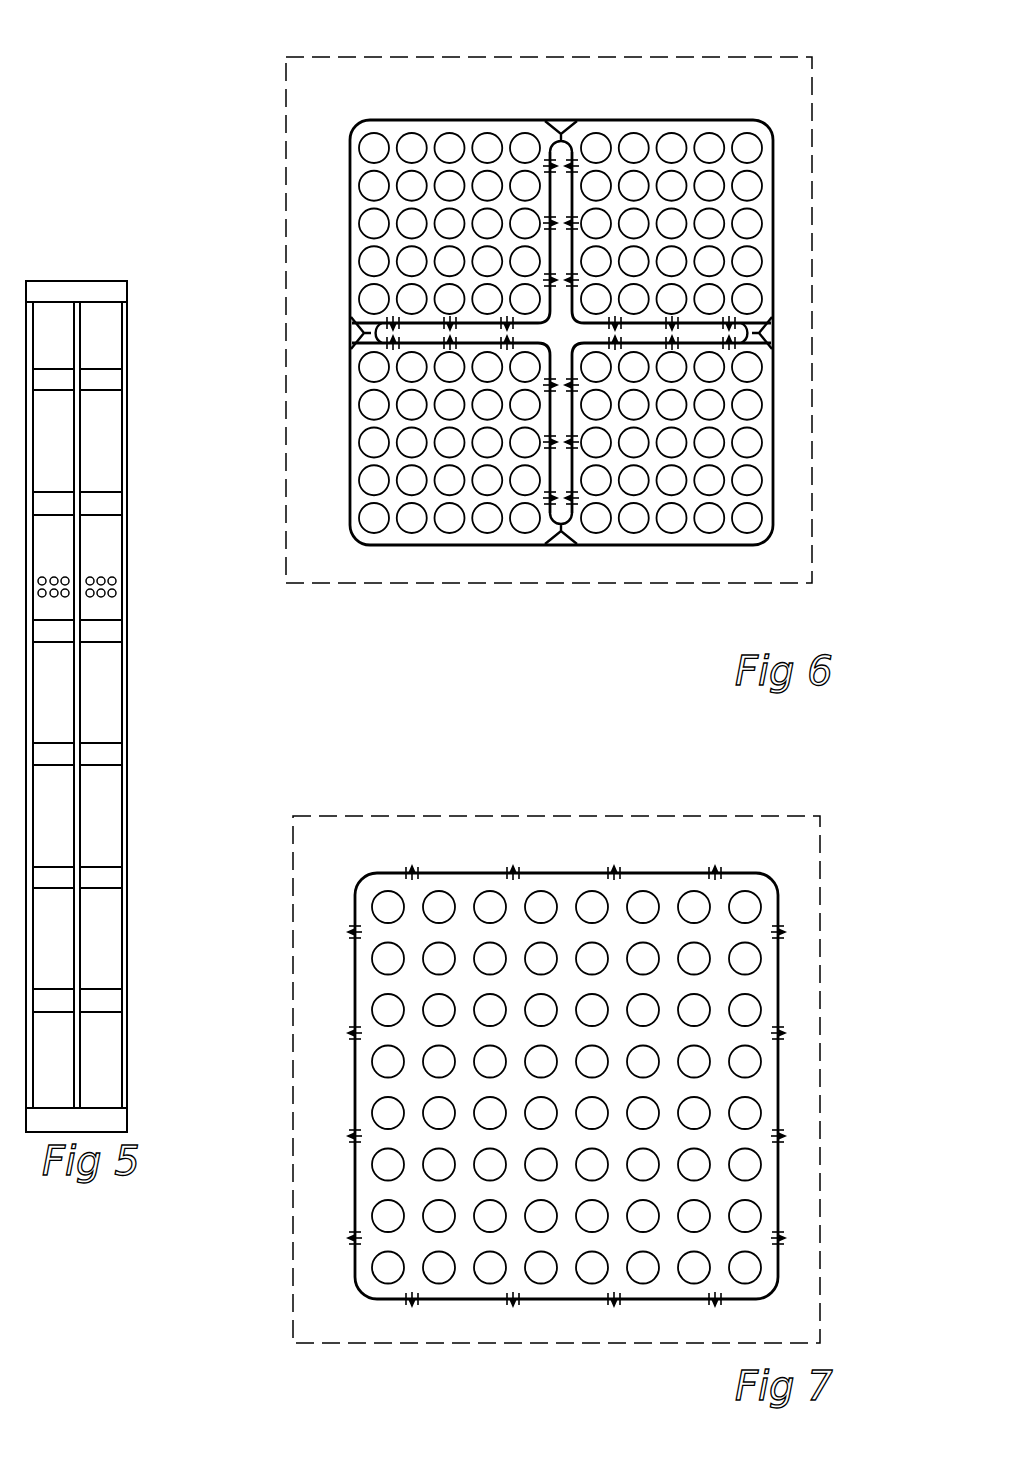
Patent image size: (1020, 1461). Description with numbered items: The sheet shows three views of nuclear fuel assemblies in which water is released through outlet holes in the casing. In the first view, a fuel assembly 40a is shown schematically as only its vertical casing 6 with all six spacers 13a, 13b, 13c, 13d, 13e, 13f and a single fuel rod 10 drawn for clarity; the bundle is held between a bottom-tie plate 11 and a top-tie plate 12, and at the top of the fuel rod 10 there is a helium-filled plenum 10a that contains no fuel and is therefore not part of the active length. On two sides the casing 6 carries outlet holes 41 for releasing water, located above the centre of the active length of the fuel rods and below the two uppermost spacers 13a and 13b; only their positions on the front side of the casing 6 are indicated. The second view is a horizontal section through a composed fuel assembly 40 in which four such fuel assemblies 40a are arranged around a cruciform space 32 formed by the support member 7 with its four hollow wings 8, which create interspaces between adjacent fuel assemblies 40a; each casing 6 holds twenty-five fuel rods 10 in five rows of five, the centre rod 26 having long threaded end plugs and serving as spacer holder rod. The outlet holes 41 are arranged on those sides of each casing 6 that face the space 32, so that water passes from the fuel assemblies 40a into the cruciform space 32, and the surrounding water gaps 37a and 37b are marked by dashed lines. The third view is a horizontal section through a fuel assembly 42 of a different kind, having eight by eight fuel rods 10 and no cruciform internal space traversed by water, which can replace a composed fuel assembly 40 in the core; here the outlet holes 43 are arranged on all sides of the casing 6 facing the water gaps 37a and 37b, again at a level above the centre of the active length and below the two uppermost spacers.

In FIG. 6, the casing 6 is at (410, 120).
In FIG. 7, the casing 6 is at (780, 1000).
In FIG. 6, the support member 7 is at (745, 331).
In FIG. 6, the hollow wings 8 is at (558, 148).
In FIG. 5, the fuel rods 10 is at (83, 556).
In FIG. 6, the fuel rods 10 is at (757, 143).
In FIG. 7, the fuel rods 10 is at (757, 905).
In FIG. 5, the plenum 10a is at (80, 310).
In FIG. 5, the bottom-tie plate 11 is at (115, 1122).
In FIG. 5, the top-tie plate 12 is at (118, 292).
In FIG. 5, the spacer 13a is at (117, 383).
In FIG. 5, the spacer 13b is at (110, 505).
In FIG. 5, the spacer 13c is at (110, 632).
In FIG. 5, the spacer 13d is at (110, 757).
In FIG. 5, the spacer 13e is at (110, 878).
In FIG. 5, the spacer 13f is at (105, 1002).
In FIG. 6, the centre rod 26 is at (449, 223).
In FIG. 6, the cruciform space 32 is at (775, 340).
In FIG. 6, the water gap 37a is at (395, 90).
In FIG. 7, the water gap 37a is at (400, 830).
In FIG. 6, the water gap 37b is at (800, 421).
In FIG. 7, the water gap 37b is at (810, 1062).
In FIG. 6, the composed fuel assembly 40 is at (800, 319).
In FIG. 5, the fuel assembly 40a is at (135, 466).
In FIG. 6, the fuel assembly 40a is at (407, 281).
In FIG. 5, the outlet holes 41 is at (116, 581).
In FIG. 6, the outlet holes 41 is at (697, 281).
In FIG. 7, the fuel assembly 42 is at (812, 963).
In FIG. 7, the outlet holes 43 is at (715, 862).